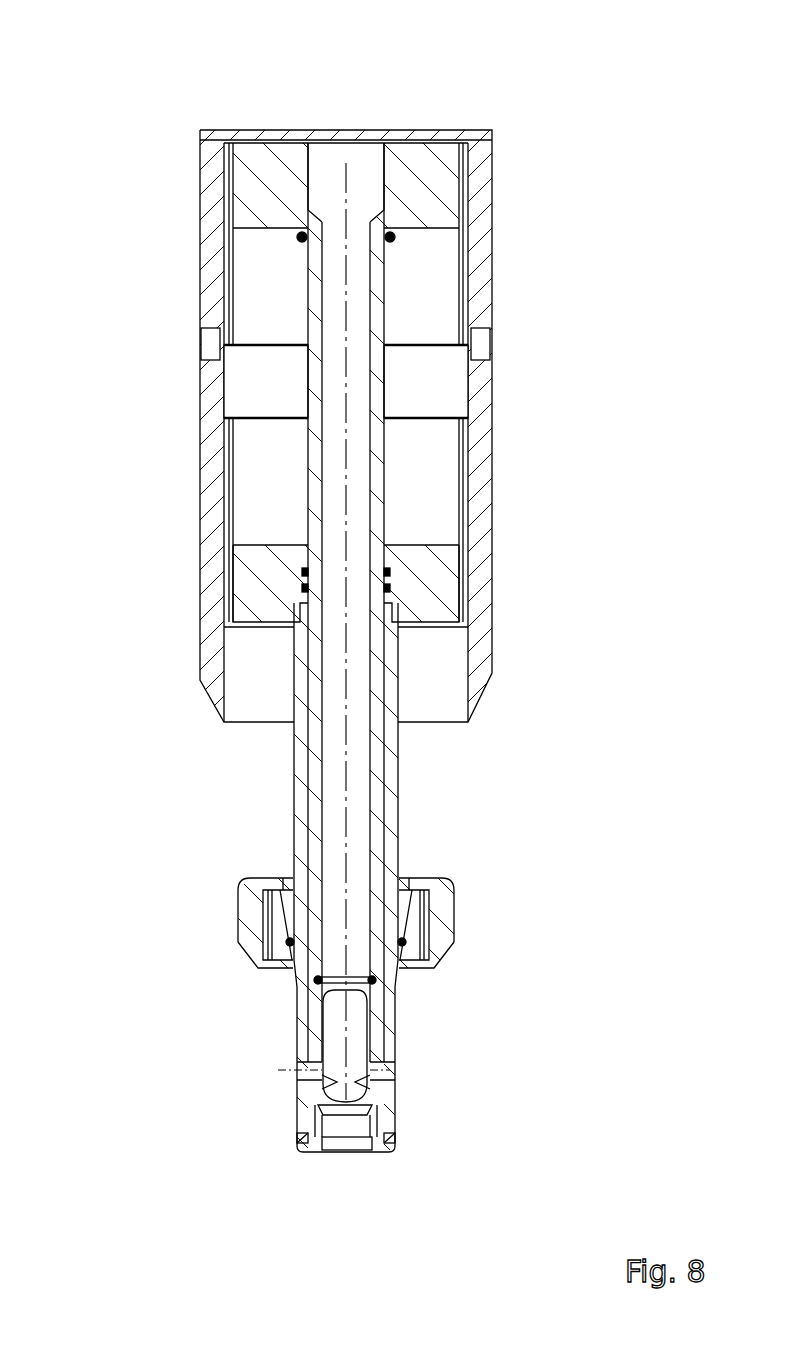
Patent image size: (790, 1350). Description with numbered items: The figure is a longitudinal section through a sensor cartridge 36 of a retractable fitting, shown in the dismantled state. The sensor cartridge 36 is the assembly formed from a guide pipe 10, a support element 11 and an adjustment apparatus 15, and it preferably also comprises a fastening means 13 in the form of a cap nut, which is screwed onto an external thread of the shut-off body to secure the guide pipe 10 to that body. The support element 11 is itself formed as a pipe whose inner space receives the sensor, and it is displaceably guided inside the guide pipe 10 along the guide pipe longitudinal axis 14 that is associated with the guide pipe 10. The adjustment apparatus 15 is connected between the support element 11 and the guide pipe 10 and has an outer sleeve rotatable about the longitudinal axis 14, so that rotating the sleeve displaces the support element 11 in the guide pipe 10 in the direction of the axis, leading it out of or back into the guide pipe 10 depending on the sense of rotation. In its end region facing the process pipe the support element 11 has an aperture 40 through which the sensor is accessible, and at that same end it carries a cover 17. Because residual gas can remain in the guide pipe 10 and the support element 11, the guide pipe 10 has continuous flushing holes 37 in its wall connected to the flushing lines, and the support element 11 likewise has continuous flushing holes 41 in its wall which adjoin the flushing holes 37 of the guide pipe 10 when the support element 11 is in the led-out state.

The sensor cartridge 36 is at (122, 90).
The adjustment apparatus 15 is at (498, 447).
The guide pipe longitudinal axis 14 is at (347, 750).
The support element 11 is at (373, 820).
The guide pipe 10 is at (300, 763).
The fastening means 13 is at (243, 915).
The aperture 40 is at (333, 1024).
The flushing holes 37 is at (393, 1064).
The flushing holes 41 is at (323, 1083).
The cover 17 is at (315, 1145).